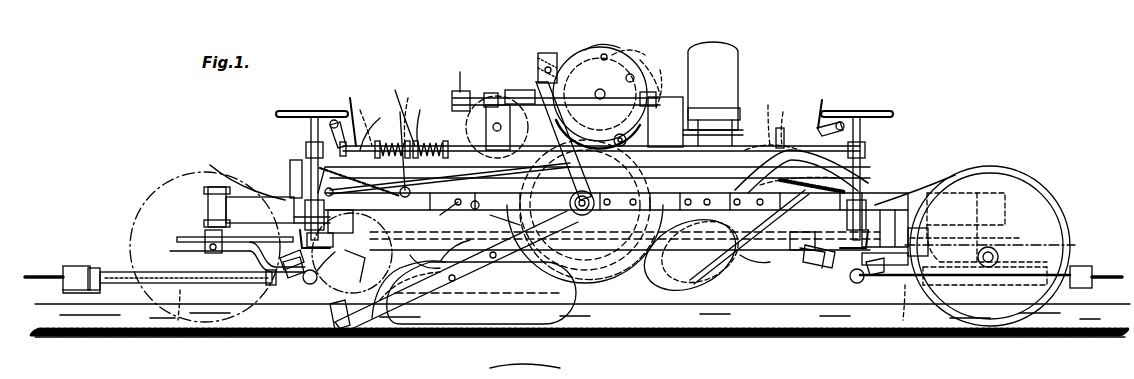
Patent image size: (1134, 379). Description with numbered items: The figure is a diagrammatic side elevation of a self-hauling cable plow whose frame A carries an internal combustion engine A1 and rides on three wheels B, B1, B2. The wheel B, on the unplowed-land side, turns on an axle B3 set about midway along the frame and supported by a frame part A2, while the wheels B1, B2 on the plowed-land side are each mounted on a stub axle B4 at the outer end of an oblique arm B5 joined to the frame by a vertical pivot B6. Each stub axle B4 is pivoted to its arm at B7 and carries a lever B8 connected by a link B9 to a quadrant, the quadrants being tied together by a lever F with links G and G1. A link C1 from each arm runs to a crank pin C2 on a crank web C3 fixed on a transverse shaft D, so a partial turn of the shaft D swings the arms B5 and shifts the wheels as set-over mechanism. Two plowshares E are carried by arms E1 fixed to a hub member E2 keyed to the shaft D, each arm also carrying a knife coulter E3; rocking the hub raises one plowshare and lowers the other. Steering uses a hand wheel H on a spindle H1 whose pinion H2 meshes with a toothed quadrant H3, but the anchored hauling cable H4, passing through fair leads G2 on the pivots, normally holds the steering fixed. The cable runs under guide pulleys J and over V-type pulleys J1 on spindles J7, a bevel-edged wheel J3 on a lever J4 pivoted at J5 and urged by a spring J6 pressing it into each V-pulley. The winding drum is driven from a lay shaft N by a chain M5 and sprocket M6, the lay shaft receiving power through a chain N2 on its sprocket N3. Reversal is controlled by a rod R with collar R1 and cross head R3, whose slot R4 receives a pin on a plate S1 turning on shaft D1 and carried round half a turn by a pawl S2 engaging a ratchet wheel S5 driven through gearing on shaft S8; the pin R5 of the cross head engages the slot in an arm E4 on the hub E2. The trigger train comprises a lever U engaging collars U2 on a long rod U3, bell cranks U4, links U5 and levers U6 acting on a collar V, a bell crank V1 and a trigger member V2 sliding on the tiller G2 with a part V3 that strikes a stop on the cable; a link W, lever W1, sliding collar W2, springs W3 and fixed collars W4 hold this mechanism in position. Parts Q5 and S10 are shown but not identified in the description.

The frame A is at (373, 134).
The internal combustion engine A1 is at (738, 54).
The frame part A2 is at (532, 366).
The wheel B is at (622, 300).
The wheel B1 is at (1035, 190).
The wheel B2 is at (150, 200).
The axle B3 is at (575, 360).
The stub axle B4 is at (178, 252).
The arm B5 is at (578, 177).
The vertical pivot B6 is at (310, 218).
The pivot B7 is at (207, 208).
The lever B8 is at (178, 238).
The link B9 is at (260, 255).
The link C1 is at (755, 150).
The crank pin C2 is at (500, 222).
The crank web C3 is at (474, 210).
The shaft D is at (600, 250).
The shaft D1 is at (600, 94).
The plowshare E is at (500, 312).
The arm E1 is at (462, 298).
The hub member E2 is at (592, 262).
The knife coulter E3 is at (345, 353).
The arm E4 is at (598, 129).
The lever F is at (690, 255).
The link G is at (755, 268).
The link G1 is at (408, 289).
The fair lead G2 is at (118, 272).
The steering wheel H is at (290, 110).
The spindle H1 is at (308, 132).
The pinion H2 is at (300, 185).
The toothed quadrant H3 is at (295, 225).
The cable H4 is at (60, 272).
The guide pulley J is at (375, 300).
The V-type pulley J1 is at (425, 290).
The wheel J3 is at (593, 121).
The lever J4 is at (370, 215).
The pivot J5 is at (386, 292).
The spring J6 is at (310, 200).
The spindle J7 is at (442, 216).
The chain M5 is at (664, 80).
The sprocket M6 is at (481, 293).
The lay shaft N is at (631, 74).
The chain N2 is at (540, 66).
The sprocket N3 is at (628, 47).
The rod Q5 is at (463, 73).
The rod R is at (470, 98).
The collar R1 is at (455, 100).
The cross head R3 is at (538, 60).
The slot R4 is at (510, 98).
The pin R5 is at (495, 86).
The plate S1 is at (595, 50).
The pawl S2 is at (654, 64).
The ratchet wheel S5 is at (604, 54).
The shaft S8 is at (660, 93).
The roller S10 is at (624, 135).
The lever U is at (680, 100).
The collars U2 is at (700, 110).
The rod U3 is at (565, 117).
The bell crank lever U4 is at (592, 116).
The link U5 is at (360, 125).
The lever U6 is at (318, 290).
The collar V is at (308, 290).
The bell crank lever V1 is at (290, 275).
The trigger member V2 is at (180, 290).
The part V3 is at (92, 270).
The link W is at (400, 190).
The lever W1 is at (405, 186).
The collar W2 is at (415, 154).
The springs W3 is at (415, 113).
The collars W4 is at (450, 146).